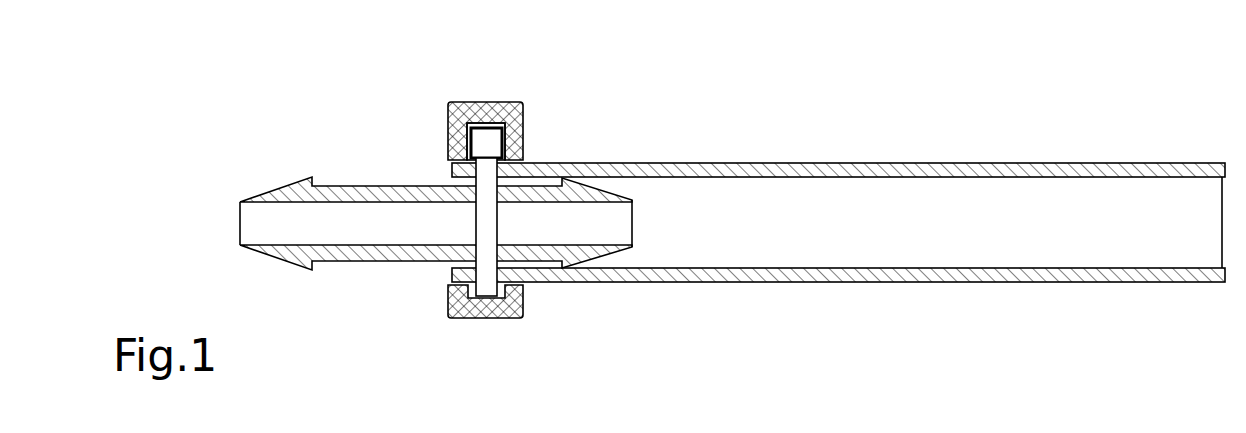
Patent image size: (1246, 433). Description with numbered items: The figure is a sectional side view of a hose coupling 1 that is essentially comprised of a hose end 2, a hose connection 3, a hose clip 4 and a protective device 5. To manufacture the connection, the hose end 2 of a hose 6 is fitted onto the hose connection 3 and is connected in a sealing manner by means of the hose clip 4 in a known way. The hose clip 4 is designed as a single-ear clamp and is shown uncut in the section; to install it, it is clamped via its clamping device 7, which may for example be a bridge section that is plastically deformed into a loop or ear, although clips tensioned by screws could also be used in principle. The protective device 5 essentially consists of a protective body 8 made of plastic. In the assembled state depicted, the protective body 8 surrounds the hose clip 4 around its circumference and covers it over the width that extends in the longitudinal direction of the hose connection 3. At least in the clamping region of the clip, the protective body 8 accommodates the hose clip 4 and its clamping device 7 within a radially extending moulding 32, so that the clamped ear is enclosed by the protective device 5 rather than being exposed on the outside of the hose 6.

The hose coupling 1 is at (612, 115).
The hose end 2 is at (548, 168).
The hose connection 3 is at (363, 228).
The hose clip 4 is at (485, 215).
The protective device 5 is at (437, 97).
The hose 6 is at (1105, 218).
The clamping device 7 is at (485, 142).
The protective body 8 is at (525, 312).
The radially extending moulding 32 is at (490, 122).